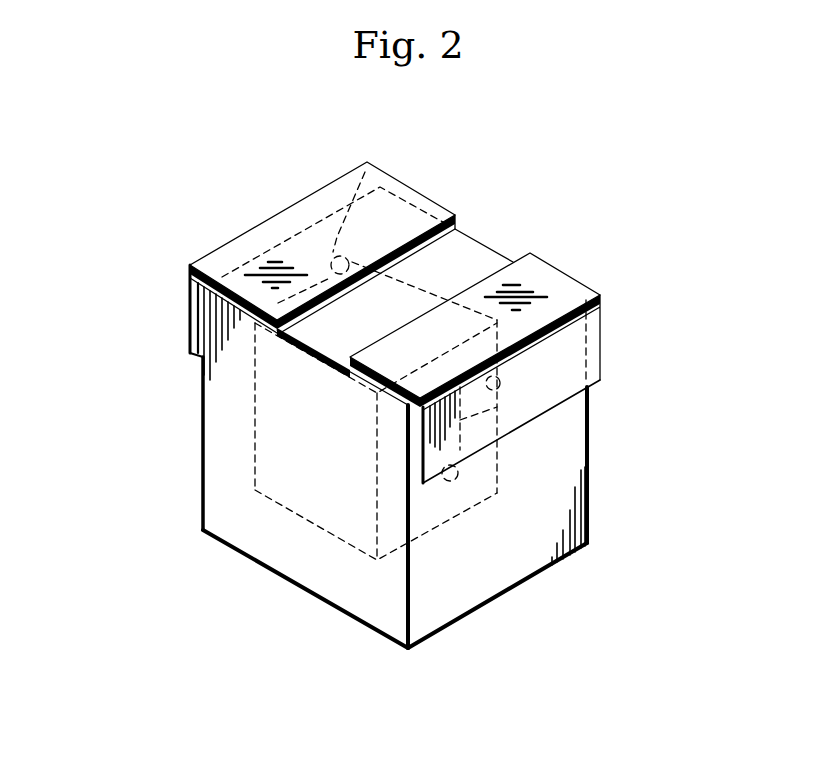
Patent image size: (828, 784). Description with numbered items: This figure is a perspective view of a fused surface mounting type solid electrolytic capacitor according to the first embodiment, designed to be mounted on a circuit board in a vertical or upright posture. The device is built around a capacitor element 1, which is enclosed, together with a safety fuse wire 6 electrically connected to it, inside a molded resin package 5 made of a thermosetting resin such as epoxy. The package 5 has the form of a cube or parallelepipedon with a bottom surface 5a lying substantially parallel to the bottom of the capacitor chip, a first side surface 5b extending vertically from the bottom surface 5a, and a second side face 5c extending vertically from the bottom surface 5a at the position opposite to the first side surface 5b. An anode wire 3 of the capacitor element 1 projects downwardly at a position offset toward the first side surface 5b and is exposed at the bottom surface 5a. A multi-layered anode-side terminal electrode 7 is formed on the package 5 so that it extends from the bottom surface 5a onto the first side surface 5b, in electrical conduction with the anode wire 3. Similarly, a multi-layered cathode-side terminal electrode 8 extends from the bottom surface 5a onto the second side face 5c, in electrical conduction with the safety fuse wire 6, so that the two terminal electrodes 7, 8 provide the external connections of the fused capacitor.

The capacitor element 1 is at (381, 397).
The anode wire 3 is at (368, 160).
The molded resin package 5 is at (341, 435).
The bottom surface 5a is at (463, 257).
The first side surface 5b is at (202, 418).
The second side face 5c is at (435, 512).
The safety fuse wire 6 is at (500, 409).
The anode-side terminal electrode 7 is at (312, 243).
The cathode-side terminal electrode 8 is at (572, 358).